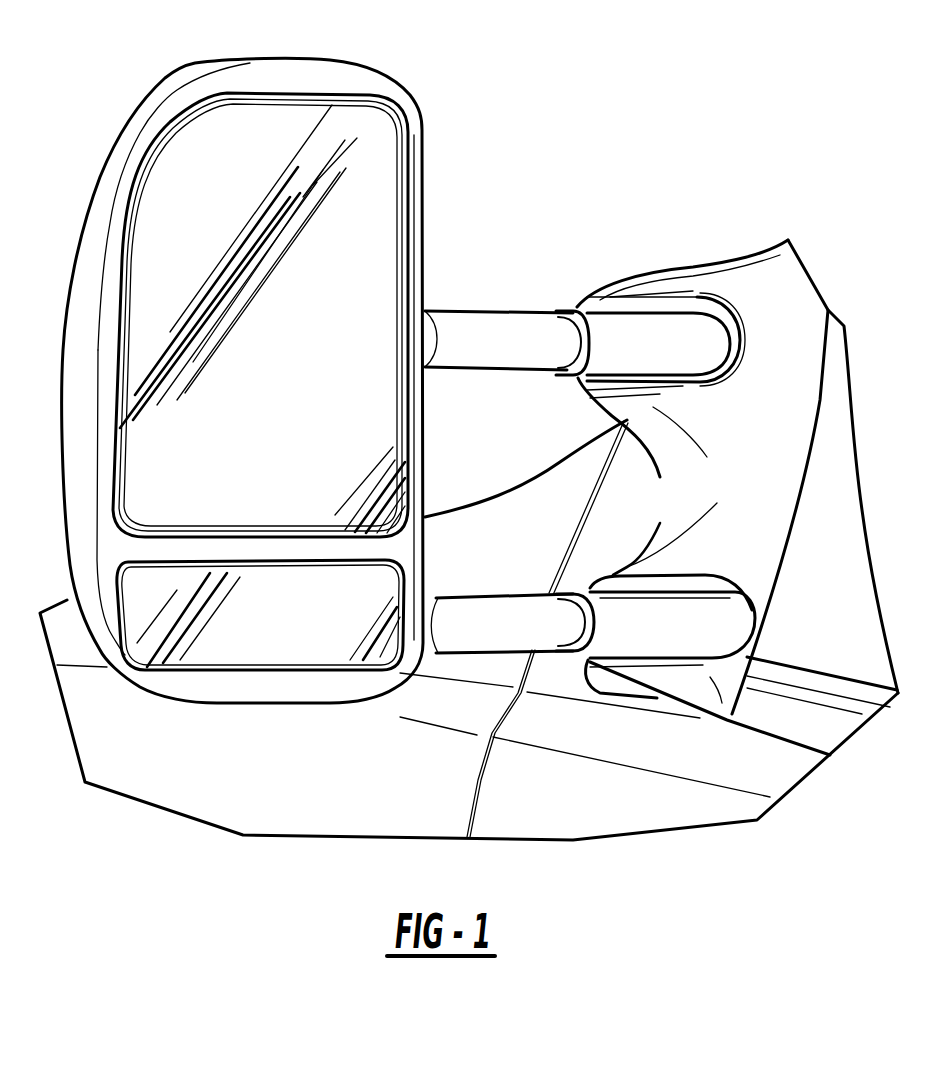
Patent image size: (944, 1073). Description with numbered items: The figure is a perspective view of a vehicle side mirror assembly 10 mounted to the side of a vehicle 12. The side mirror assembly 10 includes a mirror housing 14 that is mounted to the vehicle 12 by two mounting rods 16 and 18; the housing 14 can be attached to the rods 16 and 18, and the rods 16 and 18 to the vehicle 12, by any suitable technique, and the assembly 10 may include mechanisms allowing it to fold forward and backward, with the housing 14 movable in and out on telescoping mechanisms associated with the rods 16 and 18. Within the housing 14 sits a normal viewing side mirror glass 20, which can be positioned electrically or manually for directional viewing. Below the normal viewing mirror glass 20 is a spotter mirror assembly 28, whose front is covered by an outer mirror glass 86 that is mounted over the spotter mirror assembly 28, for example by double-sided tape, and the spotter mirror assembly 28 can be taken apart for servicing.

The vehicle side mirror assembly 10 is at (636, 168).
The vehicle 12 is at (797, 295).
The mirror housing 14 is at (368, 78).
The mounting rod 16 is at (467, 334).
The mounting rod 18 is at (487, 627).
The normal viewing side mirror glass 20 is at (352, 228).
The spotter mirror assembly 28 is at (213, 669).
The outer mirror glass 86 is at (267, 632).